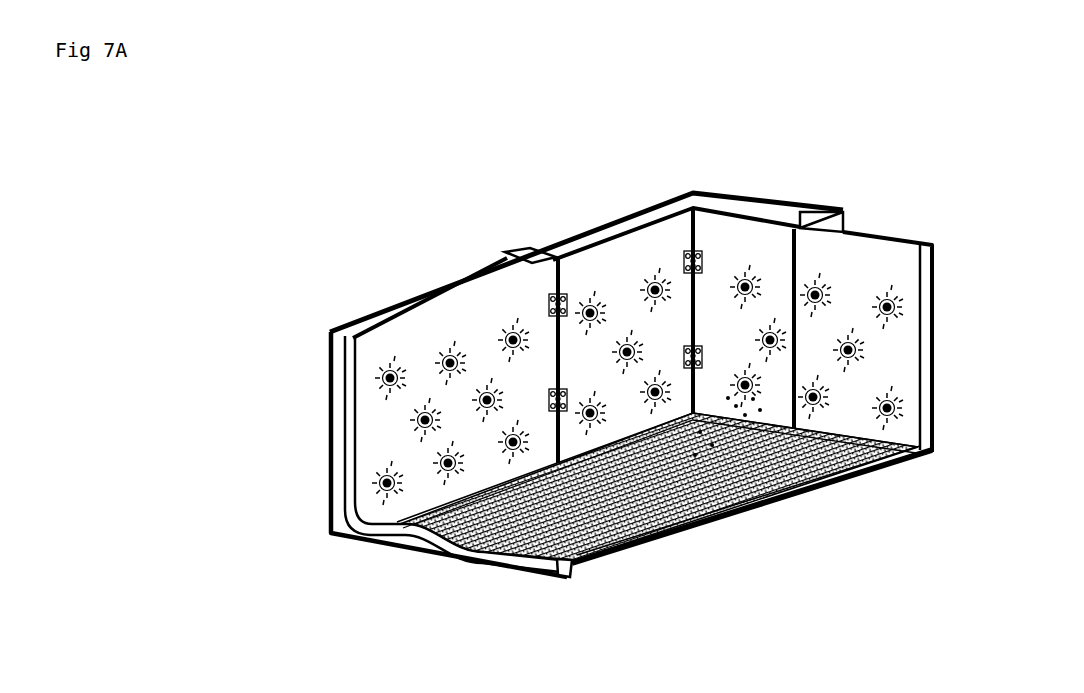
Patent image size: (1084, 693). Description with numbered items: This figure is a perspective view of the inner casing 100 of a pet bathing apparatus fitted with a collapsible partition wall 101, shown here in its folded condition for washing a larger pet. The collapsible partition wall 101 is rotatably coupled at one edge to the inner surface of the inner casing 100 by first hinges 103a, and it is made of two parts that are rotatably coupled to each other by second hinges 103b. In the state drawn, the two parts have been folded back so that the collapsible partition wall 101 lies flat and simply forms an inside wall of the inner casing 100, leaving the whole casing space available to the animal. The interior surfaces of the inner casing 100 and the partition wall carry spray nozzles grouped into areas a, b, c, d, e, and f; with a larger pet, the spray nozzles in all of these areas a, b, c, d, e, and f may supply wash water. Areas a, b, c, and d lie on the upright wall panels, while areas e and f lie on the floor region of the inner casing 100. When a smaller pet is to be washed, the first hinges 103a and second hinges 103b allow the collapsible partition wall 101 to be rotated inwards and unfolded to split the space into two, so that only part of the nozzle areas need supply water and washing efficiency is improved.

The inner casing 100 is at (338, 517).
The collapsible partition wall 101 is at (767, 278).
The first hinges 103a is at (549, 296).
The second hinges 103b is at (688, 305).
The spray nozzle area a is at (457, 407).
The spray nozzle area b is at (620, 332).
The spray nozzle area c is at (740, 327).
The spray nozzle area d is at (862, 360).
The spray nozzle area e is at (583, 533).
The spray nozzle area f is at (740, 477).